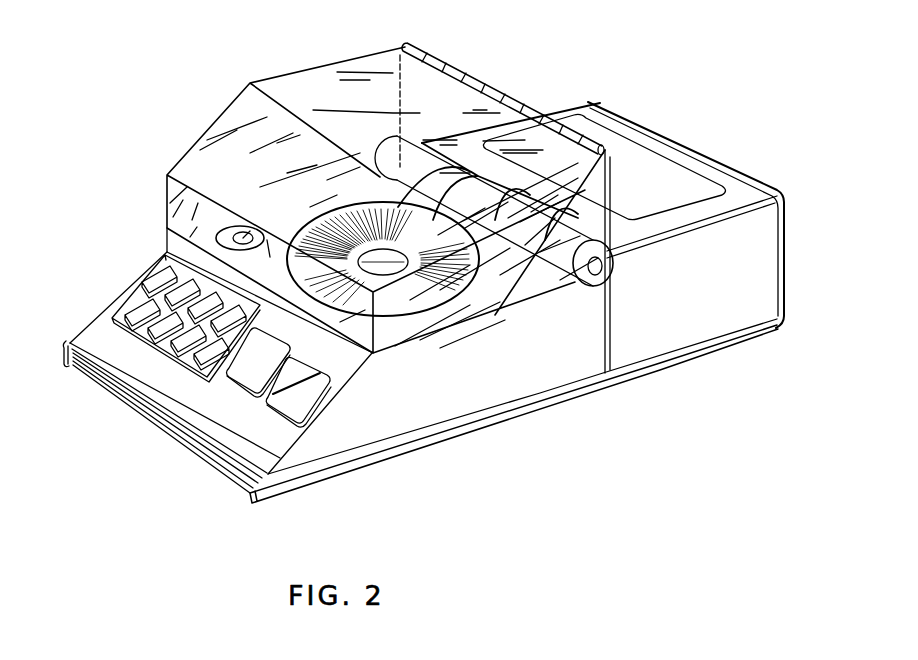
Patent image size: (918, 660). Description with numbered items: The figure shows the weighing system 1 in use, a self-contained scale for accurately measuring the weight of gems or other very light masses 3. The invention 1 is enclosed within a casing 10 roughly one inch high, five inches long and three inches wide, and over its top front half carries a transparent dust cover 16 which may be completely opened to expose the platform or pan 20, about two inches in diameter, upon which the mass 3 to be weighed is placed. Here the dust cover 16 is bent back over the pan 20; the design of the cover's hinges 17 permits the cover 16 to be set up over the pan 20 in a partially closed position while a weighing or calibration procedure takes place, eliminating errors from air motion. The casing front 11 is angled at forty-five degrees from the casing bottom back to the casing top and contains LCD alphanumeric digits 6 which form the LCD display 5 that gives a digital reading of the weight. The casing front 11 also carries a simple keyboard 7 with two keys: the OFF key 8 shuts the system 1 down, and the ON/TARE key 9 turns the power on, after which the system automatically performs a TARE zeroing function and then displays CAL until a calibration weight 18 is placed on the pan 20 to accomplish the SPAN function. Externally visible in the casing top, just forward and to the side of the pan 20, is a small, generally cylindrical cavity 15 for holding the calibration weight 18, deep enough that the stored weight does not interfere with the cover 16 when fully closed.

The weighing system 1 is at (133, 121).
The mass 3 is at (378, 254).
The LCD display 5 is at (97, 273).
The LCD alphanumeric digits 6 is at (177, 269).
The keyboard 7 is at (312, 350).
The OFF key 8 is at (250, 378).
The ON/TARE key 9 is at (281, 410).
The casing 10 is at (748, 190).
The casing front 11 is at (137, 453).
The cavity 15 is at (238, 234).
The transparent dust cover 16 is at (317, 70).
The hinges 17 is at (420, 53).
The calibration weight 18 is at (252, 237).
The pan 20 is at (478, 261).